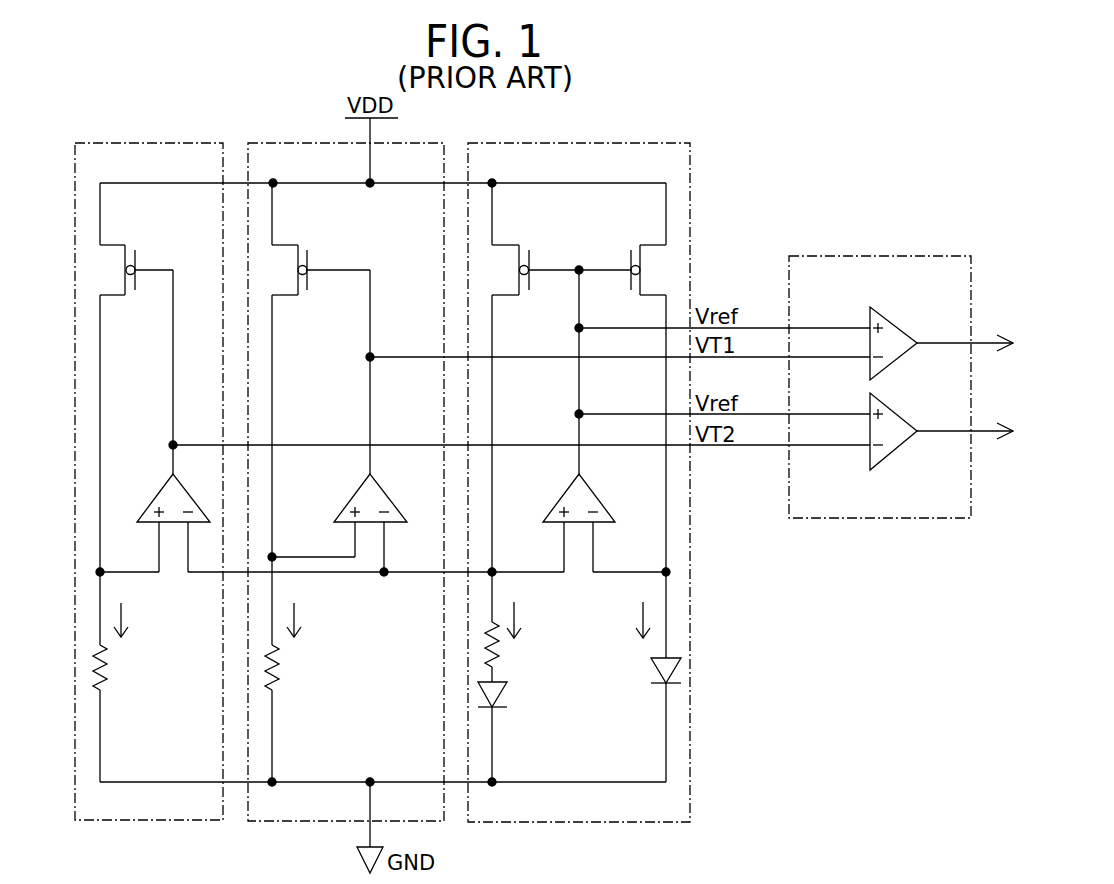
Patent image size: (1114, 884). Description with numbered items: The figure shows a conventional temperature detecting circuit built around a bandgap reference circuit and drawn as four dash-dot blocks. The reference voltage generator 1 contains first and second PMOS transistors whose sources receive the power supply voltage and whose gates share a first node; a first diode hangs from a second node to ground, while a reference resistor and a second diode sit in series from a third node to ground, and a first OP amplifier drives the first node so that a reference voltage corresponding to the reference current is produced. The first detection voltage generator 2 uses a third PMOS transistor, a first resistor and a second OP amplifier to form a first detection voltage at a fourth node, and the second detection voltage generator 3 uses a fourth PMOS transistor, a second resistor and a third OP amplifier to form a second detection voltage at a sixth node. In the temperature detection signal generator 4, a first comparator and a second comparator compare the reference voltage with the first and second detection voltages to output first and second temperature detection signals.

The reference voltage generator 1 is at (641, 143).
The first detection voltage generator 2 is at (283, 143).
The second detection voltage generator 3 is at (116, 143).
The temperature detection signal generator 4 is at (941, 256).